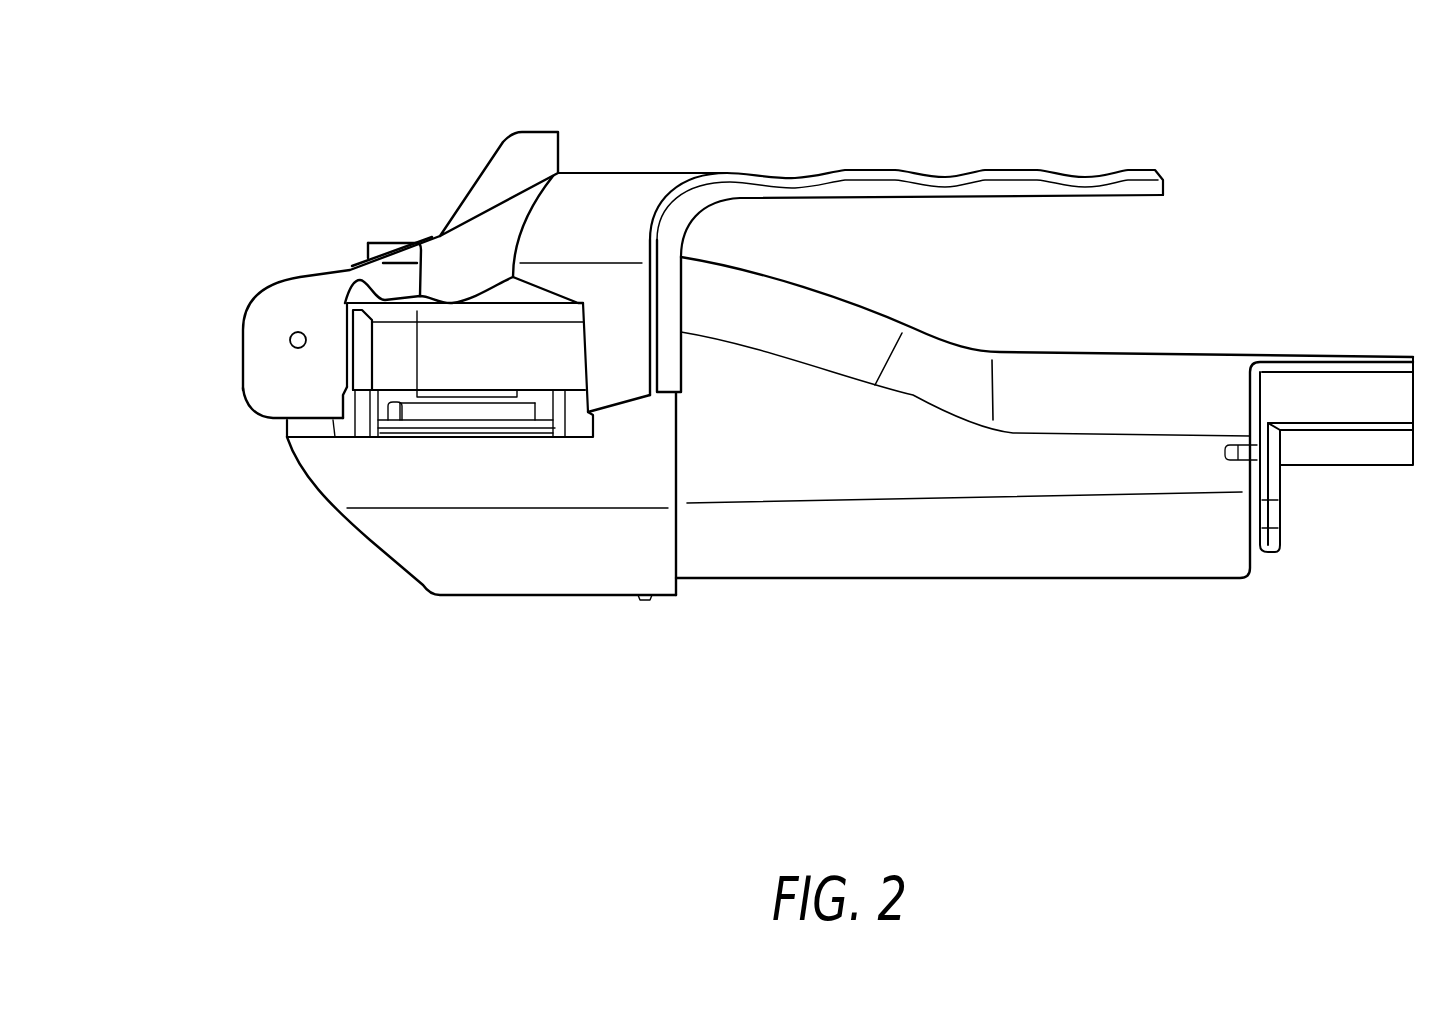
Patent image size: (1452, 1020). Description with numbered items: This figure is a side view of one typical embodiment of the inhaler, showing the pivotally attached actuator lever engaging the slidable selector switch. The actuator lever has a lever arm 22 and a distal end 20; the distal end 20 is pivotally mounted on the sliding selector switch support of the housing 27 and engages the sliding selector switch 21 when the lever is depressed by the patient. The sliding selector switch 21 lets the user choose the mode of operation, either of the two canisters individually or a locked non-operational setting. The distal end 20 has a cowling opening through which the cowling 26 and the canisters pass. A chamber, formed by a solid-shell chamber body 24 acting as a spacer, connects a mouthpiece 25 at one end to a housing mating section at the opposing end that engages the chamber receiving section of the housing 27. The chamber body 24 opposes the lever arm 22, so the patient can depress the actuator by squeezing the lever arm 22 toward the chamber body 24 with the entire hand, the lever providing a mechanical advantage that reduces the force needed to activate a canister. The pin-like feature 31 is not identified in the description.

The distal end 20 is at (243, 327).
The sliding selector switch 21 is at (443, 362).
The lever arm 22 is at (1063, 175).
The chamber body 24 is at (1003, 580).
The mouthpiece 25 is at (1332, 355).
The cowling 26 is at (558, 145).
The housing 27 is at (497, 597).
The pivot pin 31 is at (291, 339).